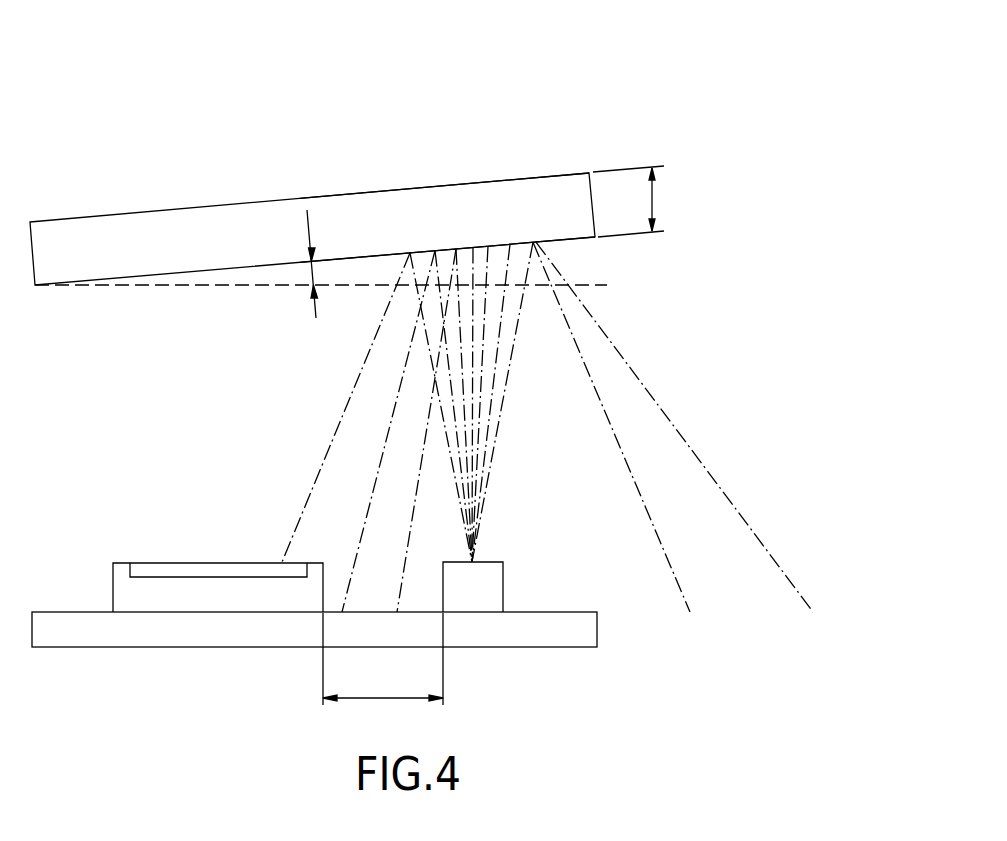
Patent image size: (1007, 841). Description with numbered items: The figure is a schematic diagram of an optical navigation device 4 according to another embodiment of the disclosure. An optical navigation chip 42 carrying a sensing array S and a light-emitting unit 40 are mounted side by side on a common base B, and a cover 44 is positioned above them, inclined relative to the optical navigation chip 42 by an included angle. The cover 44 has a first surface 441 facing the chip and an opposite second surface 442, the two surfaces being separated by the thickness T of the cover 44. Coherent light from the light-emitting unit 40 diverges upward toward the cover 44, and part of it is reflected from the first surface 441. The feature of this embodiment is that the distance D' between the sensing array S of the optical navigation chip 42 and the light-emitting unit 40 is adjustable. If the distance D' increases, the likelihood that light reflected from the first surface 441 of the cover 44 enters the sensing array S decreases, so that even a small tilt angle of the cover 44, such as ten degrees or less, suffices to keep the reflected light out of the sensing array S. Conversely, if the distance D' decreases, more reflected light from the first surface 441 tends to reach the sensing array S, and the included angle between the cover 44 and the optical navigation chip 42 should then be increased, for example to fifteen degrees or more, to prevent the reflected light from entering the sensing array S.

The optical navigation device 4 is at (24, 36).
The cover 44 is at (247, 228).
The top surface of lens 442 is at (505, 179).
The first surface 441 is at (571, 241).
The optical navigation chip 42 is at (122, 589).
The light-emitting unit 40 is at (473, 600).
The sensing array S is at (156, 568).
The substrate B is at (197, 630).
The thickness of lens T is at (628, 201).
The distance D' is at (383, 659).